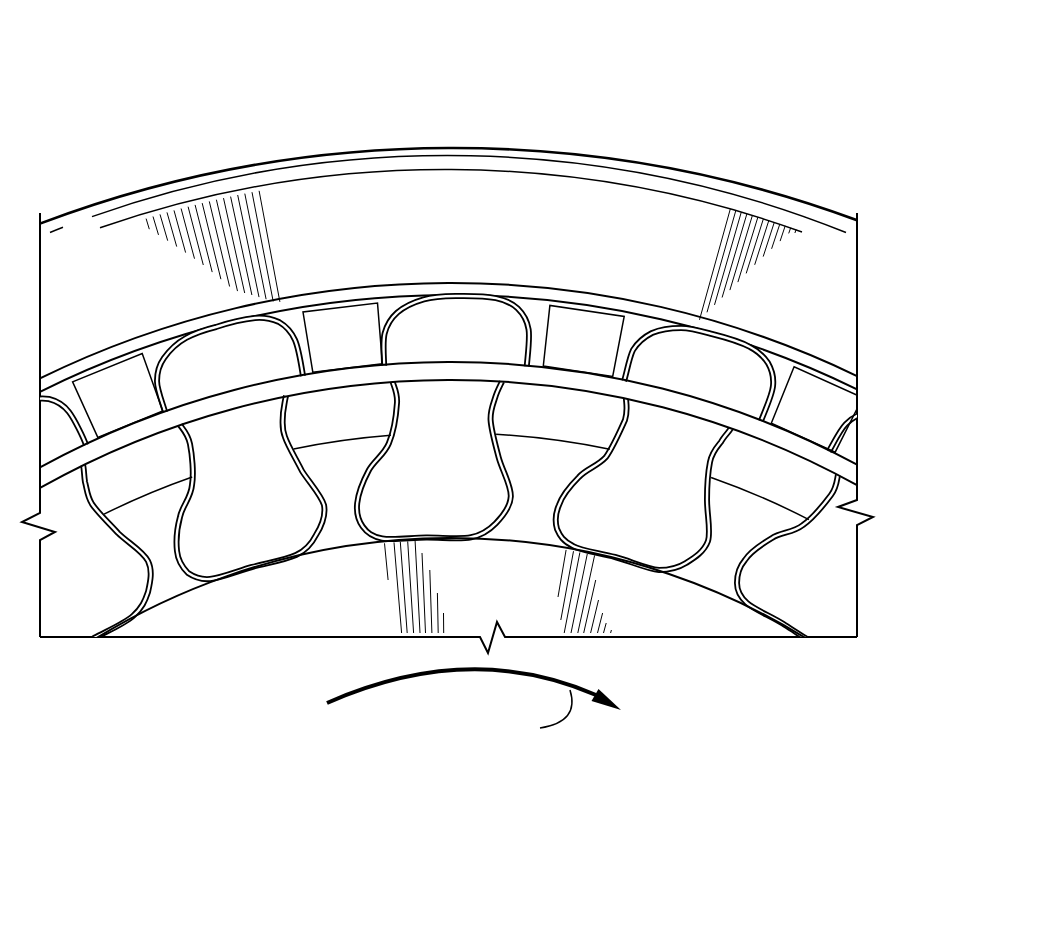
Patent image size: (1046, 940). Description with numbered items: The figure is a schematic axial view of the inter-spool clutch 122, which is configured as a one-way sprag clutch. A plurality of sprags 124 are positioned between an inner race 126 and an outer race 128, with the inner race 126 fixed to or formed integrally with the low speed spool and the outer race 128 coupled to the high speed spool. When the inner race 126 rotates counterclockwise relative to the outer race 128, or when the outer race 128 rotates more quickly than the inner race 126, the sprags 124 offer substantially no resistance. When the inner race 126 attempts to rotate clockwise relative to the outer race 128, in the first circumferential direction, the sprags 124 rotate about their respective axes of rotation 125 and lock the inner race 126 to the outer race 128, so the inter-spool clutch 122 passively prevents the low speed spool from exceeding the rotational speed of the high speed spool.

The inter-spool clutch 122 is at (726, 106).
The sprags 124 is at (470, 313).
The axes of rotation 125 is at (670, 443).
The inner race 126 is at (305, 615).
The outer race 128 is at (268, 202).